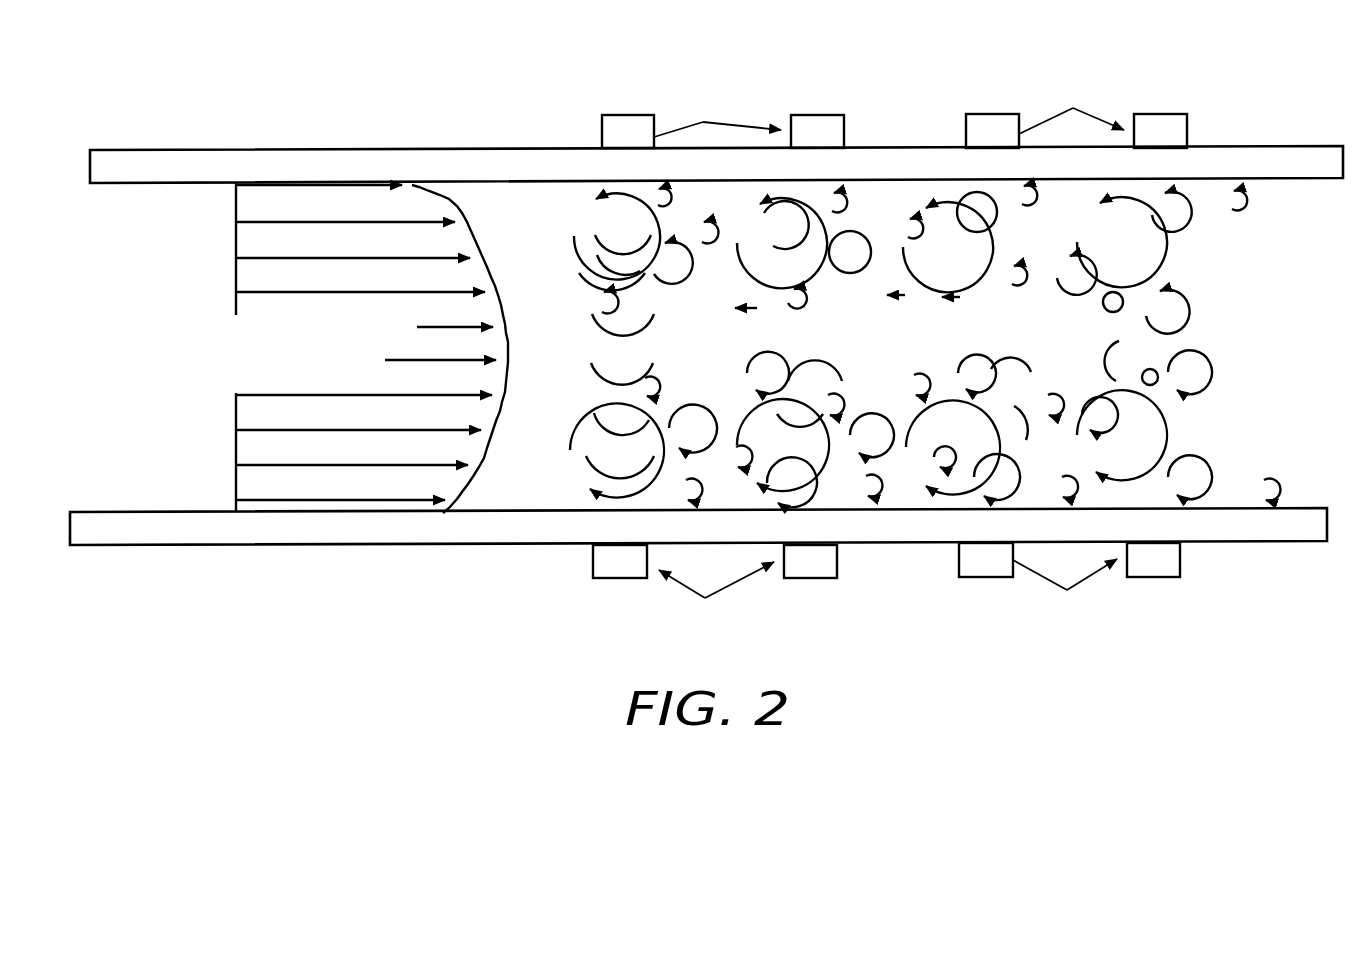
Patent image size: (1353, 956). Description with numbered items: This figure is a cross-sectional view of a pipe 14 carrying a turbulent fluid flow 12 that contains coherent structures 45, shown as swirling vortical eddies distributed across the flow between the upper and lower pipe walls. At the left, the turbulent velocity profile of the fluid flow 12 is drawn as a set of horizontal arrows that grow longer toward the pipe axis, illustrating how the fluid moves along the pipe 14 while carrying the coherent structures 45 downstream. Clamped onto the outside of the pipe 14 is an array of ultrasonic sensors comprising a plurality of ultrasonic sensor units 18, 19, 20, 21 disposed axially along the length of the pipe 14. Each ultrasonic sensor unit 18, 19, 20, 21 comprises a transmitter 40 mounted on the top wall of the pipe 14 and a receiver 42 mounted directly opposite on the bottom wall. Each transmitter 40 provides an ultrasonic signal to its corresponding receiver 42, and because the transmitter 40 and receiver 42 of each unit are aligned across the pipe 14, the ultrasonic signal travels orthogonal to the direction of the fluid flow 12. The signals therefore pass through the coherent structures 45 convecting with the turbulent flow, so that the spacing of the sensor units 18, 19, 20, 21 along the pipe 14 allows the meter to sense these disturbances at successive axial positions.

The fluid flow 12 is at (517, 230).
The pipe 14 is at (1290, 146).
The ultrasonic sensor unit 18 is at (607, 115).
The ultrasonic sensor unit 19 is at (800, 115).
The ultrasonic sensor unit 20 is at (1008, 114).
The ultrasonic sensor unit 21 is at (1142, 114).
The transmitter 40 is at (889, 108).
The receiver 42 is at (888, 600).
The coherent structures 45 is at (1163, 255).